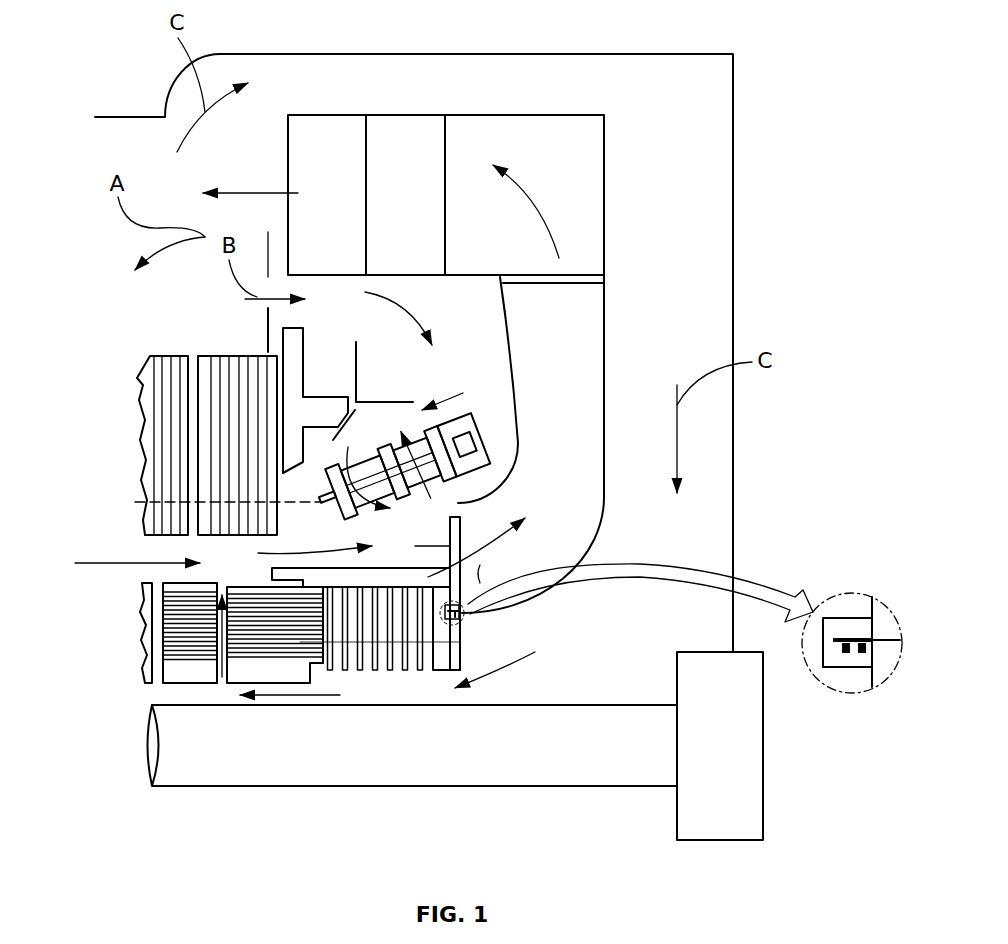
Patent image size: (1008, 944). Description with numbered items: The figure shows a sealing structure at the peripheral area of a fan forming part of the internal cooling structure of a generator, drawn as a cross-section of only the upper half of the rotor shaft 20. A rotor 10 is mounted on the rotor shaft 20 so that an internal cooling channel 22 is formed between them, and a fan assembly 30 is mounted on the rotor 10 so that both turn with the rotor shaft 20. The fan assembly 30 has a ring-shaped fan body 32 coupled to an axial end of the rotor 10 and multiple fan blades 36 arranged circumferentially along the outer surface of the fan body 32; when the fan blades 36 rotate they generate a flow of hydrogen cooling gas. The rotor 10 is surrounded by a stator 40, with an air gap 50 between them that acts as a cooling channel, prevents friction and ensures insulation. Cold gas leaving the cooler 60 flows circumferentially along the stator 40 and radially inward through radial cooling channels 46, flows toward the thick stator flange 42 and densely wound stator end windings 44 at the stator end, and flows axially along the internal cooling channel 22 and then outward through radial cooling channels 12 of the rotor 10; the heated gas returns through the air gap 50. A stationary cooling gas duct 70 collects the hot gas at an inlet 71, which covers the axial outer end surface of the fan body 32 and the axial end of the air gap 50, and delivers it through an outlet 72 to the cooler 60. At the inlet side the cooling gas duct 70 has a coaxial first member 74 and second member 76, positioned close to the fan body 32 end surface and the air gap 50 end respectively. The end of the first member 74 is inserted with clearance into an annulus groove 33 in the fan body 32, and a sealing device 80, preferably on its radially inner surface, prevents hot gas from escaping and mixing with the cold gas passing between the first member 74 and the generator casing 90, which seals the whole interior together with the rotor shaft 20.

The rotor 10 is at (169, 711).
The radial cooling channels 12 is at (222, 680).
The rotor shaft 20 is at (770, 745).
The internal cooling channel 22 is at (405, 683).
The fan assembly 30 is at (587, 599).
The fan body 32 is at (430, 577).
The annulus groove 33 is at (671, 641).
The fan blades 36 is at (458, 530).
The stator 40 is at (261, 411).
The stator flange 42 is at (293, 333).
The stator end windings 44 is at (422, 427).
The radial cooling channels 46 is at (193, 365).
The air gap 50 is at (137, 548).
The cooler 60 is at (475, 105).
The cooling gas duct 70 is at (642, 444).
The inlet 71 is at (483, 573).
The outlet 72 is at (540, 322).
The first member 74 is at (615, 545).
The second member 76 is at (560, 452).
The sealing device 80 is at (845, 655).
The generator casing 90 is at (734, 125).